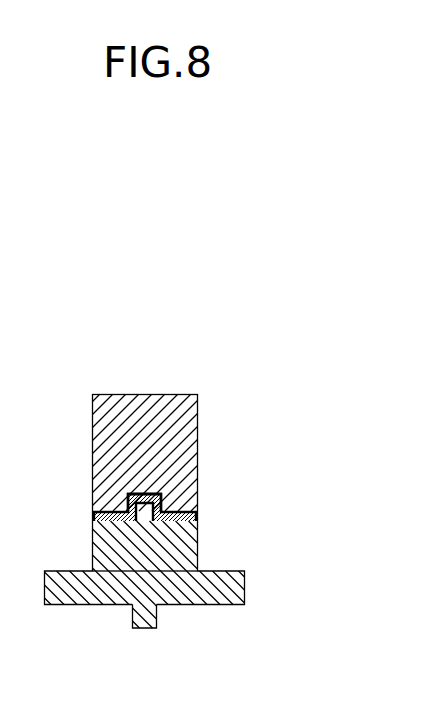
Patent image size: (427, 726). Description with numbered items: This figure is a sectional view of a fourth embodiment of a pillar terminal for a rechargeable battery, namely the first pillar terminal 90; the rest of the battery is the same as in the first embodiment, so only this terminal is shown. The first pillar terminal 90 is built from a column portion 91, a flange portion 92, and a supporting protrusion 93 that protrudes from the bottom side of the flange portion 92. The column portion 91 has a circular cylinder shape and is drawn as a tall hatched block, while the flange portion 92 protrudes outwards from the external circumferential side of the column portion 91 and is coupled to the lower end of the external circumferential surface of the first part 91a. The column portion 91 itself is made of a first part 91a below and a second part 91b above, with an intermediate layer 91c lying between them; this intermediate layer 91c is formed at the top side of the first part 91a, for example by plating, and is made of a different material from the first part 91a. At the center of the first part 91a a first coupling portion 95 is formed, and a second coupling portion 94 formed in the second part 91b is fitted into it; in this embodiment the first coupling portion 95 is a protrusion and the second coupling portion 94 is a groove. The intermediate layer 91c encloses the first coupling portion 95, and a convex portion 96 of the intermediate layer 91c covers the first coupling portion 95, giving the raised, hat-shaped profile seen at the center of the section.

The first pillar terminal 90 is at (242, 361).
The column portion 91 is at (297, 412).
The first part 91a is at (198, 538).
The second part 91b is at (198, 420).
The intermediate layer 91c is at (198, 498).
The flange portion 92 is at (233, 585).
The supporting protrusion 93 is at (146, 630).
The second coupling portion 94 is at (127, 504).
The first coupling portion 95 is at (143, 512).
The convex portion 96 is at (147, 497).